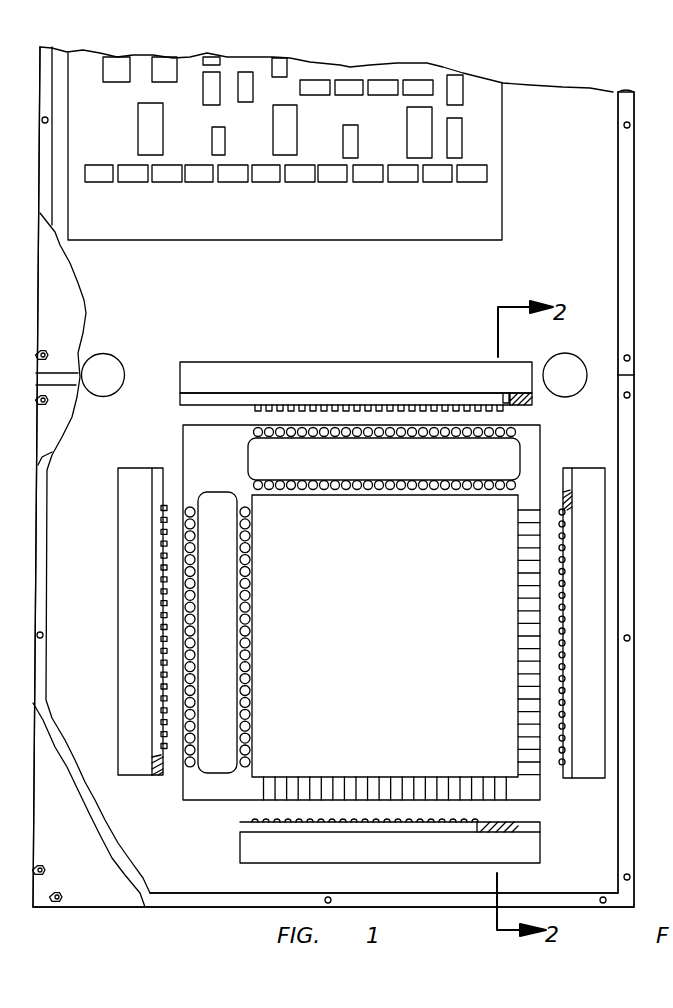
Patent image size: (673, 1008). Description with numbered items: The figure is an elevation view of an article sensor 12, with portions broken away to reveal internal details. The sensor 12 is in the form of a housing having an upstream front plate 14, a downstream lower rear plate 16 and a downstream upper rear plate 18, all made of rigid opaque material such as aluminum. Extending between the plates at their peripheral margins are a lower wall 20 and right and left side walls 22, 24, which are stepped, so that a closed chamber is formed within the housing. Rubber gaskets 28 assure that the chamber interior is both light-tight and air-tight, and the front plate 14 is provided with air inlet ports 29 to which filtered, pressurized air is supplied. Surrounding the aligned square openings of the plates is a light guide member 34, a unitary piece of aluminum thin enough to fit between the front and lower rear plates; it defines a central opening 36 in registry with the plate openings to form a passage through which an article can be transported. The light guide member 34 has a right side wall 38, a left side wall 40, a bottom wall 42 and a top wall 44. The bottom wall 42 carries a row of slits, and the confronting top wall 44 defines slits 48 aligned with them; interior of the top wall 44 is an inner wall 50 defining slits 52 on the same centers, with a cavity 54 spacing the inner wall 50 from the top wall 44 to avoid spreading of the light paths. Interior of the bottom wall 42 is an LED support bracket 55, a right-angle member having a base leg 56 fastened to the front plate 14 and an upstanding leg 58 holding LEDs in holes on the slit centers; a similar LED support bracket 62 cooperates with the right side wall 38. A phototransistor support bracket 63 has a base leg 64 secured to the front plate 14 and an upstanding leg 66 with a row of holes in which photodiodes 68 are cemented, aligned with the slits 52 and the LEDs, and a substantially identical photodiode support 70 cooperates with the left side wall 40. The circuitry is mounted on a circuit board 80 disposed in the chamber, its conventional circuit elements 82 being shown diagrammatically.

The article sensor 12 is at (640, 279).
The upstream front plate 14 is at (266, 299).
The downstream lower rear plate 16 is at (83, 864).
The downstream upper rear plate 18 is at (68, 324).
The lower wall 20 is at (588, 908).
The right side wall 22 is at (618, 823).
The left side wall 24 is at (48, 596).
The rubber gaskets 28 is at (115, 836).
The air inlet ports 29 is at (108, 354).
The light guide member 34 is at (394, 607).
The central opening 36 is at (394, 692).
The right side wall 38 is at (518, 766).
The left side wall 40 is at (258, 500).
The bottom wall 42 is at (253, 775).
The top wall 44 is at (516, 497).
The slits 48 is at (443, 481).
The inner wall 50 is at (318, 436).
The slits 52 is at (390, 441).
The cavity 54 is at (252, 456).
The LED support bracket 55 is at (376, 851).
The base leg 56 is at (240, 850).
The upstanding leg 58 is at (240, 826).
The LED support bracket 62 is at (590, 786).
The phototransistor support bracket 63 is at (344, 371).
The base leg 64 is at (178, 380).
The upstanding leg 66 is at (178, 396).
The photodiodes 68 is at (515, 408).
The photodiode support 70 is at (112, 495).
The circuit board 80 is at (502, 225).
The circuit elements 82 is at (240, 165).